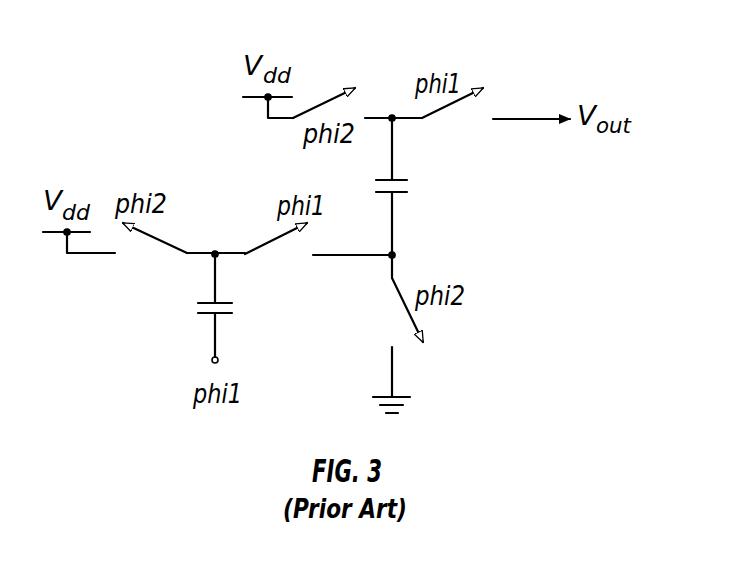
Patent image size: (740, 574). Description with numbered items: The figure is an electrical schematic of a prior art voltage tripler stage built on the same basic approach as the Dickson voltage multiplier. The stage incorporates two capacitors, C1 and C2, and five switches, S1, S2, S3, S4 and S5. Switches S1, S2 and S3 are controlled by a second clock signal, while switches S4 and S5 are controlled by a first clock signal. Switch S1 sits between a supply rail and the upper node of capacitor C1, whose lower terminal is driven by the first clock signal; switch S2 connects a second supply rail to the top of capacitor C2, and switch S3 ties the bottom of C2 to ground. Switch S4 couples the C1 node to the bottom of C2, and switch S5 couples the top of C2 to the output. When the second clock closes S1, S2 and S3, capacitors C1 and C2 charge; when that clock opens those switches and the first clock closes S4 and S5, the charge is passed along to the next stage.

The switch S1 is at (141, 261).
The switch S2 is at (354, 61).
The switch S3 is at (441, 318).
The switch S4 is at (275, 265).
The switch S5 is at (484, 71).
The capacitor C1 is at (196, 308).
The capacitor C2 is at (409, 198).